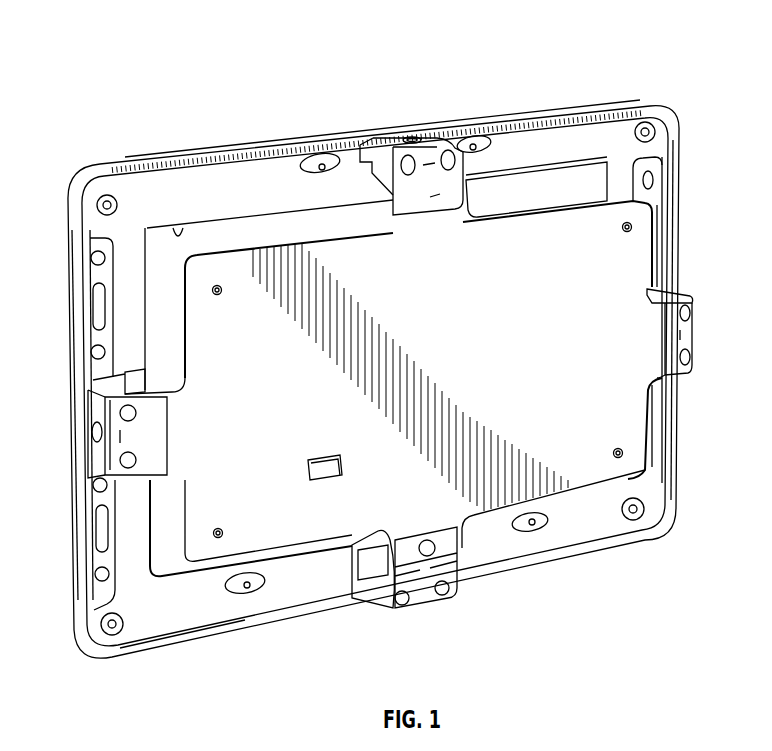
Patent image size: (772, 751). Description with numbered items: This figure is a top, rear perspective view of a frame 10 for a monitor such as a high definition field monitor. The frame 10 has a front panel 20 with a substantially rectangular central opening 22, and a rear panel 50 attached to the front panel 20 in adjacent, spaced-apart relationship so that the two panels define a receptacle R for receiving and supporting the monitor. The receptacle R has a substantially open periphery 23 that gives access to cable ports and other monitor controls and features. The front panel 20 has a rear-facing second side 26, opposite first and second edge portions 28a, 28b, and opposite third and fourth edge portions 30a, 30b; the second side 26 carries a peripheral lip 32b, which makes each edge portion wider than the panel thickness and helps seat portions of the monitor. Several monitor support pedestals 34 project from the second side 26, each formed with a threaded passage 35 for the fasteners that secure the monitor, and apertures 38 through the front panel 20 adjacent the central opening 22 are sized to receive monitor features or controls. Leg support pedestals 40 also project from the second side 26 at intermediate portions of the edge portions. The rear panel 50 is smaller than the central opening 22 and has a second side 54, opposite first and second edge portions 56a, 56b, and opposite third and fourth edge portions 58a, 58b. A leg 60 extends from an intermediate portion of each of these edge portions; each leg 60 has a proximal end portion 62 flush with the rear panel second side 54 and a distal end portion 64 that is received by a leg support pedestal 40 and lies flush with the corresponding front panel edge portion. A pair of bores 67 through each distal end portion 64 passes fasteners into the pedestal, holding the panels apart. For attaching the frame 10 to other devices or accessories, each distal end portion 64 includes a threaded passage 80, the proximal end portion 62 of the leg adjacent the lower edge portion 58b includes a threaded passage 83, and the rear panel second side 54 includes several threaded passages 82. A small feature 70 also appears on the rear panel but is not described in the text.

The frame 10 is at (575, 78).
The front panel 20 is at (641, 105).
The central opening 22 is at (178, 228).
The receptacle R is at (215, 242).
The open periphery 23 is at (166, 281).
The second side 26 is at (552, 153).
The first edge portion 28a is at (73, 225).
The second edge portion 28b is at (668, 458).
The third edge portion 30a is at (254, 148).
The fourth edge portion 30b is at (240, 640).
The peripheral lip 32b is at (668, 180).
The monitor support pedestal 34 is at (306, 168).
The threaded passage 35 is at (323, 168).
The aperture 38 is at (95, 305).
The leg support pedestal 40 is at (366, 158).
The rear panel 50 is at (640, 255).
The second side 54 is at (524, 244).
The first edge portion 56a is at (183, 523).
The second edge portion 56b is at (660, 445).
The third edge portion 58a is at (262, 248).
The fourth edge portion 58b is at (492, 515).
The leg 60 is at (380, 365).
The proximal end portion 62 is at (430, 195).
The distal end portion 64 is at (397, 136).
The bore 67 is at (410, 175).
The block 70 is at (330, 478).
The threaded passage 80 is at (413, 137).
The threaded passage 82 is at (625, 232).
The threaded passage 83 is at (432, 546).